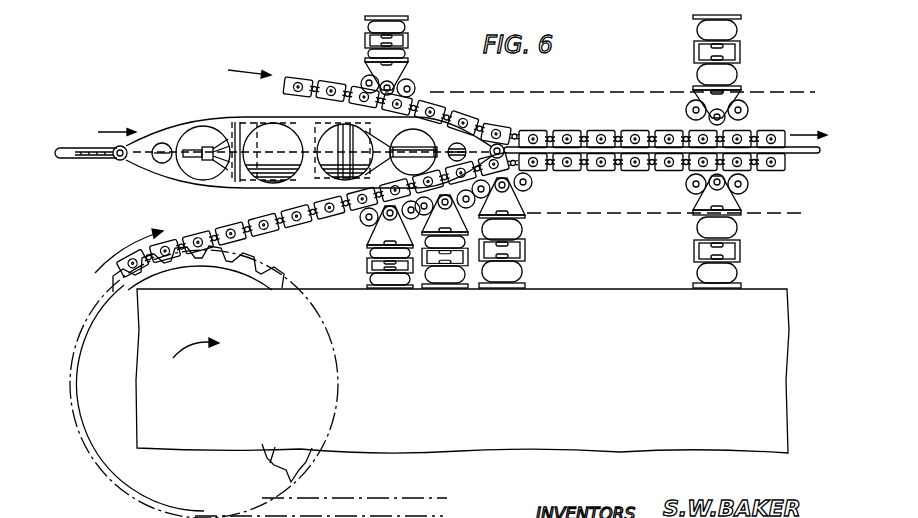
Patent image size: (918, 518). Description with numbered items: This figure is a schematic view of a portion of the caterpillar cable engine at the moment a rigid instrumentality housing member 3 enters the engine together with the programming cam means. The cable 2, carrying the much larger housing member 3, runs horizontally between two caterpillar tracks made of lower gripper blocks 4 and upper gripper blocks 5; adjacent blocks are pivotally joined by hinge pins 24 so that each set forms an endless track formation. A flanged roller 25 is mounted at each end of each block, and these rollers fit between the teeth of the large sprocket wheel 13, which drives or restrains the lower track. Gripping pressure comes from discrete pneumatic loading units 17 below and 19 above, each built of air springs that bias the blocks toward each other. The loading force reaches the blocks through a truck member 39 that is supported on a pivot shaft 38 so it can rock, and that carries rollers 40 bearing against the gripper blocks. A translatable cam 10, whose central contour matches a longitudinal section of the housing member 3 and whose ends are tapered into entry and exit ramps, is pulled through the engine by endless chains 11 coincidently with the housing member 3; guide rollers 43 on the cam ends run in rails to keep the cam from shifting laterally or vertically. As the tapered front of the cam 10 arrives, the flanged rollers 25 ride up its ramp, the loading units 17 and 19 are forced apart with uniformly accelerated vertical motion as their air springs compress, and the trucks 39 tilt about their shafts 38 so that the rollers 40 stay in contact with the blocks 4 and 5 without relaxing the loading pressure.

The cable 2 is at (70, 161).
The endless chains 11 is at (104, 160).
The guide rollers 43 is at (125, 163).
The translatable cams 10 is at (203, 124).
The rigid instrumentality housing member 3 is at (273, 133).
The lower gripper blocks 4 is at (221, 228).
The upper gripper blocks 5 is at (534, 127).
The sprocket wheel 13 is at (283, 272).
The upper pneumatic loading units 19 is at (410, 36).
The lower pneumatic loading units 17 is at (520, 250).
The pivot shaft 38 is at (403, 68).
The truck member 39 is at (403, 80).
The rollers 40 is at (413, 90).
The flanged roller 25 is at (462, 125).
The hinge pin 24 is at (515, 138).